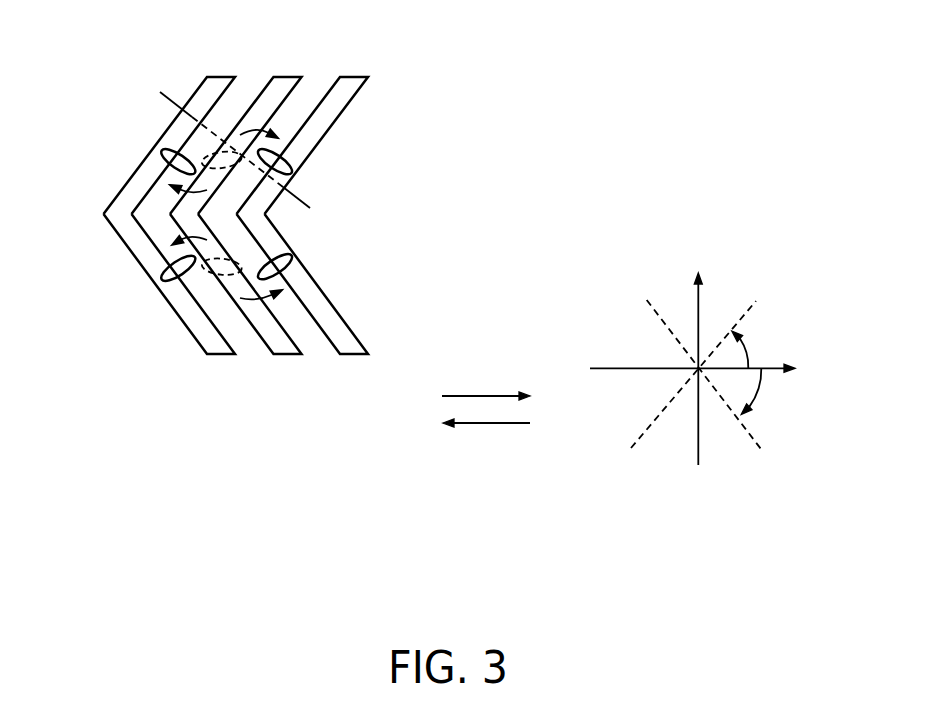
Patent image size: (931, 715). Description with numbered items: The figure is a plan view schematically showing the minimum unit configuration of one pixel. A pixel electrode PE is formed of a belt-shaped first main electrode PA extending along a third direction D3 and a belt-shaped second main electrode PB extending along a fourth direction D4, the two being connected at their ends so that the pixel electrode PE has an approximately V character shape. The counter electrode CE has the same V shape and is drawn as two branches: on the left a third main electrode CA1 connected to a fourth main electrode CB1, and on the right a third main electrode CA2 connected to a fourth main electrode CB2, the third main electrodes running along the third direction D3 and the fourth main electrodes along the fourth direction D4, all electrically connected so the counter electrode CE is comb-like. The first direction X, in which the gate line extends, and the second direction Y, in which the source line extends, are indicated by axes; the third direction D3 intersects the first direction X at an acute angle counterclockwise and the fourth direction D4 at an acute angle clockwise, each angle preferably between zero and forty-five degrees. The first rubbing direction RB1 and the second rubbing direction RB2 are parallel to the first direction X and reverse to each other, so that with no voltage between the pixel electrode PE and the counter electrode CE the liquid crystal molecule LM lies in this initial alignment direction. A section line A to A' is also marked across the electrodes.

The counter electrode CE is at (240, 181).
The pixel electrode PE is at (245, 208).
The first main electrode PA is at (265, 102).
The second main electrode PB is at (283, 348).
The third main electrode CA1 is at (135, 185).
The third main electrode CA2 is at (333, 112).
The fourth main electrode CB1 is at (193, 335).
The fourth main electrode CB2 is at (342, 328).
The liquid crystal molecule LM is at (520, 185).
The section line start A is at (213, 130).
The section line end A' is at (310, 203).
The first rubbing direction RB1 is at (532, 396).
The second rubbing direction RB2 is at (437, 425).
The first direction X is at (703, 371).
The second direction Y is at (697, 353).
The third direction D3 is at (747, 315).
The fourth direction D4 is at (752, 437).